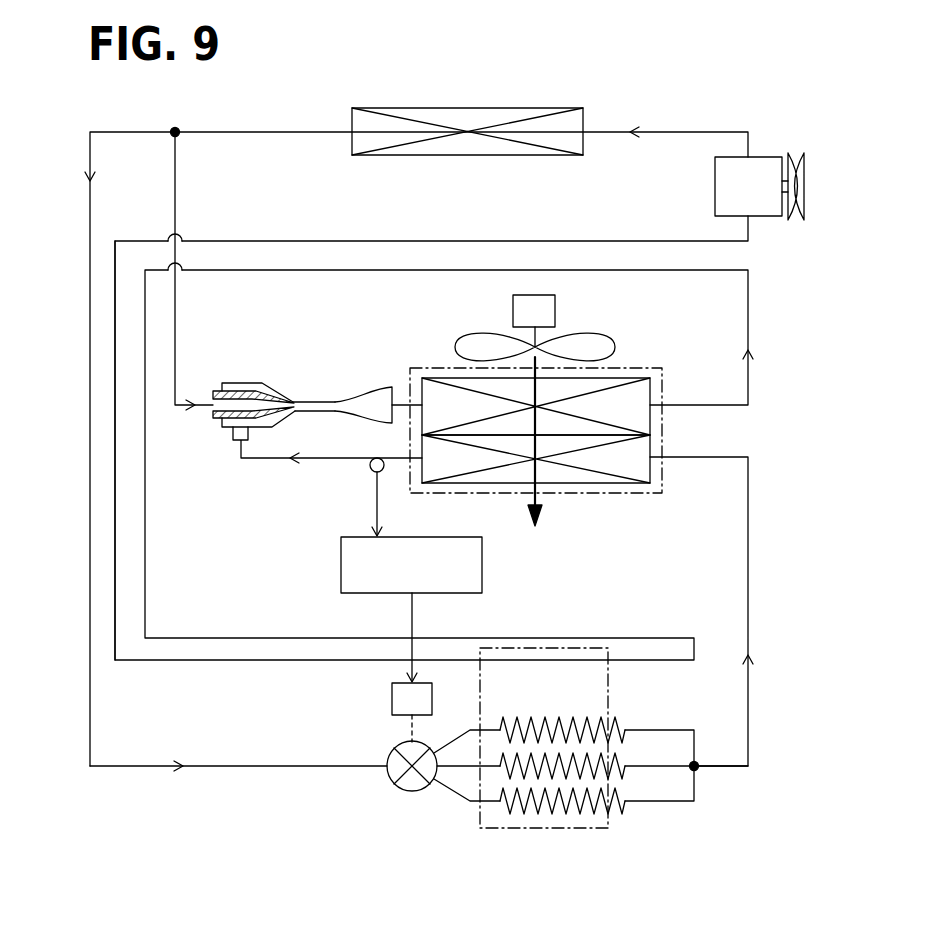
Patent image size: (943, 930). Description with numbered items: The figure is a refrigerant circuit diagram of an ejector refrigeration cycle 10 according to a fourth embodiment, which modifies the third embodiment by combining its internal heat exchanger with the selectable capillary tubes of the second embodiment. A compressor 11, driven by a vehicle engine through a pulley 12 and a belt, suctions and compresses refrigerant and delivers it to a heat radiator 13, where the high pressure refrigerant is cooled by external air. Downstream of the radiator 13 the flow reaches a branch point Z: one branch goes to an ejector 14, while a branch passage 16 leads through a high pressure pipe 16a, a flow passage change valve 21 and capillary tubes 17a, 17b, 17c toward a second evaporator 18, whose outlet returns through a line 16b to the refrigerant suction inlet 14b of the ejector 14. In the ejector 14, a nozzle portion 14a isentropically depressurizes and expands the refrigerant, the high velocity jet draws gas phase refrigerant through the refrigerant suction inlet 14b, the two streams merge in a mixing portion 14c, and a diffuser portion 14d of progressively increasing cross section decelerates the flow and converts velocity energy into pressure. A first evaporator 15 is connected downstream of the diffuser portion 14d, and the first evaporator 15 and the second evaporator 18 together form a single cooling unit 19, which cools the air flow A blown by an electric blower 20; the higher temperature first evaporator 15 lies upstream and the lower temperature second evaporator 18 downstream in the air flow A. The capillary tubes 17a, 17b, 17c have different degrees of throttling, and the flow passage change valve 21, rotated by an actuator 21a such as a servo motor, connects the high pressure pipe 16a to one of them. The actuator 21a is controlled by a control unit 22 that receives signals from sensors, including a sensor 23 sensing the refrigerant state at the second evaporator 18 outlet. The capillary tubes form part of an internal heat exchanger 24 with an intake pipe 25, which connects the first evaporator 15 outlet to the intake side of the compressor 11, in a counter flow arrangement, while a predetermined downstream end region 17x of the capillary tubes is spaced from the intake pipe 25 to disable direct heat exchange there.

The ejector refrigeration cycle 10 is at (683, 113).
The compressor 11 is at (763, 157).
The pulley 12 is at (806, 174).
The heat radiator 13 is at (485, 108).
The ejector 14 is at (338, 390).
The nozzle portion 14a is at (257, 393).
The refrigerant suction inlet 14b is at (233, 439).
The mixing portion 14c is at (308, 405).
The diffuser portion 14d is at (378, 397).
The first evaporator 15 is at (627, 397).
The branch passage 16 is at (86, 227).
The high pressure pipe 16a is at (352, 770).
The downstream branch passage portion 16b is at (731, 771).
The capillary tube 17a is at (505, 821).
The capillary tube 17b is at (571, 775).
The capillary tube 17c is at (533, 722).
The predetermined downstream end region 17x is at (619, 832).
The second evaporator 18 is at (627, 462).
The cooling unit 19 is at (665, 467).
The electric blower 20 is at (603, 337).
The flow passage change valve 21 is at (413, 792).
The actuator 21a is at (392, 700).
The control unit 22 is at (341, 565).
The sensor 23 is at (374, 471).
The internal heat exchanger 24 is at (478, 818).
The intake pipe 25 is at (116, 523).
The air flow A is at (540, 503).
The branch point Z is at (175, 130).